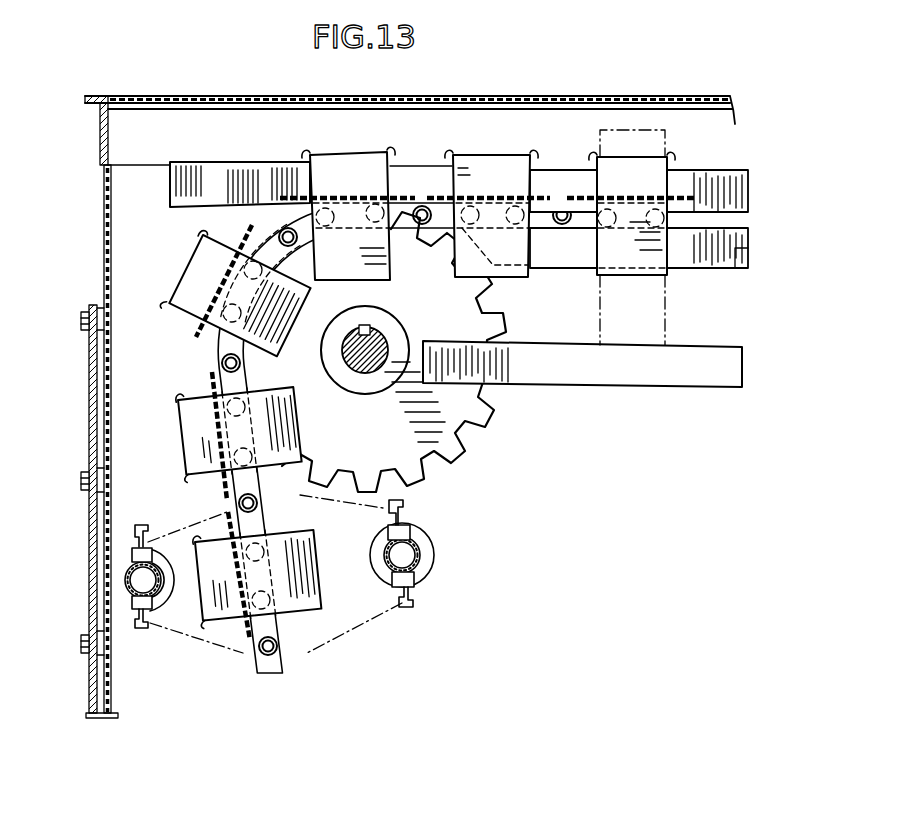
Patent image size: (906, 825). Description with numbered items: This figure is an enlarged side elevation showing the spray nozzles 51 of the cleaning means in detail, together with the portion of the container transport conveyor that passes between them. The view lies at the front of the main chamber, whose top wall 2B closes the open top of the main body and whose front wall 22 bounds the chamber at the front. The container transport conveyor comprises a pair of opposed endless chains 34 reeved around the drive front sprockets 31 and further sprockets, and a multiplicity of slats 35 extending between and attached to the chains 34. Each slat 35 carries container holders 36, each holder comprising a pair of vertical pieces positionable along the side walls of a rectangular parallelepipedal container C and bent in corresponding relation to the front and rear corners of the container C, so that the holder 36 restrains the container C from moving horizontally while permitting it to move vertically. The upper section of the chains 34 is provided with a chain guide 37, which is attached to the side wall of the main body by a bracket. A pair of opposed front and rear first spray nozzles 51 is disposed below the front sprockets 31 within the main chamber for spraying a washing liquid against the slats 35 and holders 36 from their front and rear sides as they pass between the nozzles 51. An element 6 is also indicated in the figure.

The upper rail 2B is at (622, 97).
The side wall 22 is at (104, 244).
The fingers 37 is at (748, 193).
The container position C is at (665, 318).
The bar 6 is at (712, 380).
The sprocket gear 31 is at (485, 412).
The guide rails 35 is at (212, 385).
The trays 36 is at (188, 440).
The clamps 51 is at (143, 628).
The chain 34 is at (268, 668).